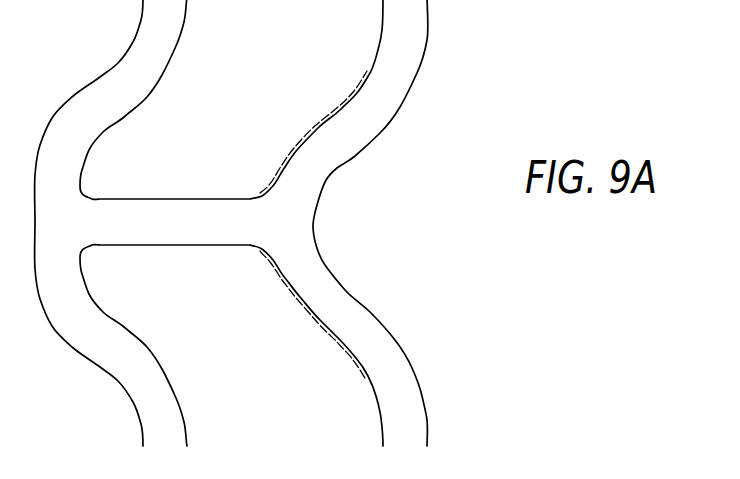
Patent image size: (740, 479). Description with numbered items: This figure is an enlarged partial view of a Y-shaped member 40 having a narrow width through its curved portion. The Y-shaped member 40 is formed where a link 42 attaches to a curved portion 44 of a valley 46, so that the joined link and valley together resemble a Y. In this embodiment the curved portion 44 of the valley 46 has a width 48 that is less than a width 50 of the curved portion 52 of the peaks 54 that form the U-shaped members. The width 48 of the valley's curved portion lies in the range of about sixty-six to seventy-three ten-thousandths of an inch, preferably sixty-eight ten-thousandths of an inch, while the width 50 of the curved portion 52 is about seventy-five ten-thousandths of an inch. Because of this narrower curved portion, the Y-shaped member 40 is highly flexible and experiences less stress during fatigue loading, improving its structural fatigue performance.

The Y-shaped member 40 is at (401, 163).
The link 42 is at (143, 199).
The curved portion 44 is at (290, 163).
The valley 46 is at (313, 220).
The width 48 is at (350, 271).
The width 50 is at (478, 25).
The curved portion 52 is at (380, 43).
The peaks 54 is at (427, 45).